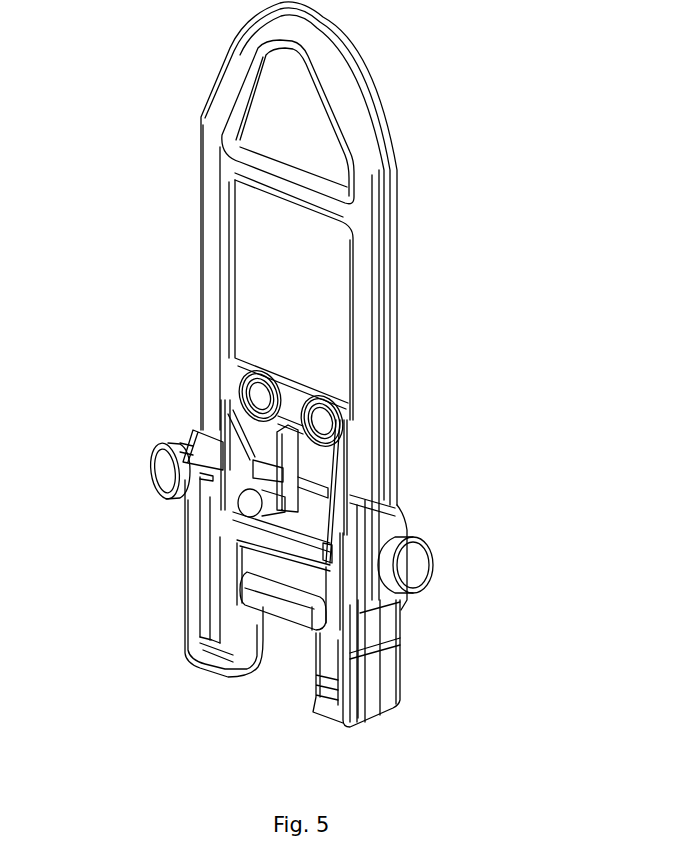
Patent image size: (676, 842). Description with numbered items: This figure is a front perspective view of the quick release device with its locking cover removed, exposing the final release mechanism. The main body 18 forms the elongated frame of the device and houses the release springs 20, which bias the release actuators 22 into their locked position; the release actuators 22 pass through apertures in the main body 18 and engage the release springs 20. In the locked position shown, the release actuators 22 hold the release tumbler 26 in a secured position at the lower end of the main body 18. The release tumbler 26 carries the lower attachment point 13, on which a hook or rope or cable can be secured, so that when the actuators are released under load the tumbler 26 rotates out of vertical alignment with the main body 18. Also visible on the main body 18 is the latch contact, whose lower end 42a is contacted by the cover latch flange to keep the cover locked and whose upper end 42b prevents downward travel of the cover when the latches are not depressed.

The main body 18 is at (368, 256).
The release springs 20 is at (350, 421).
The release actuators 22 is at (185, 465).
The lower end of latch contact 42a is at (293, 507).
The upper end of latch contact 42b is at (300, 396).
The release tumbler 26 is at (233, 583).
The lower attachment point 13 is at (275, 622).